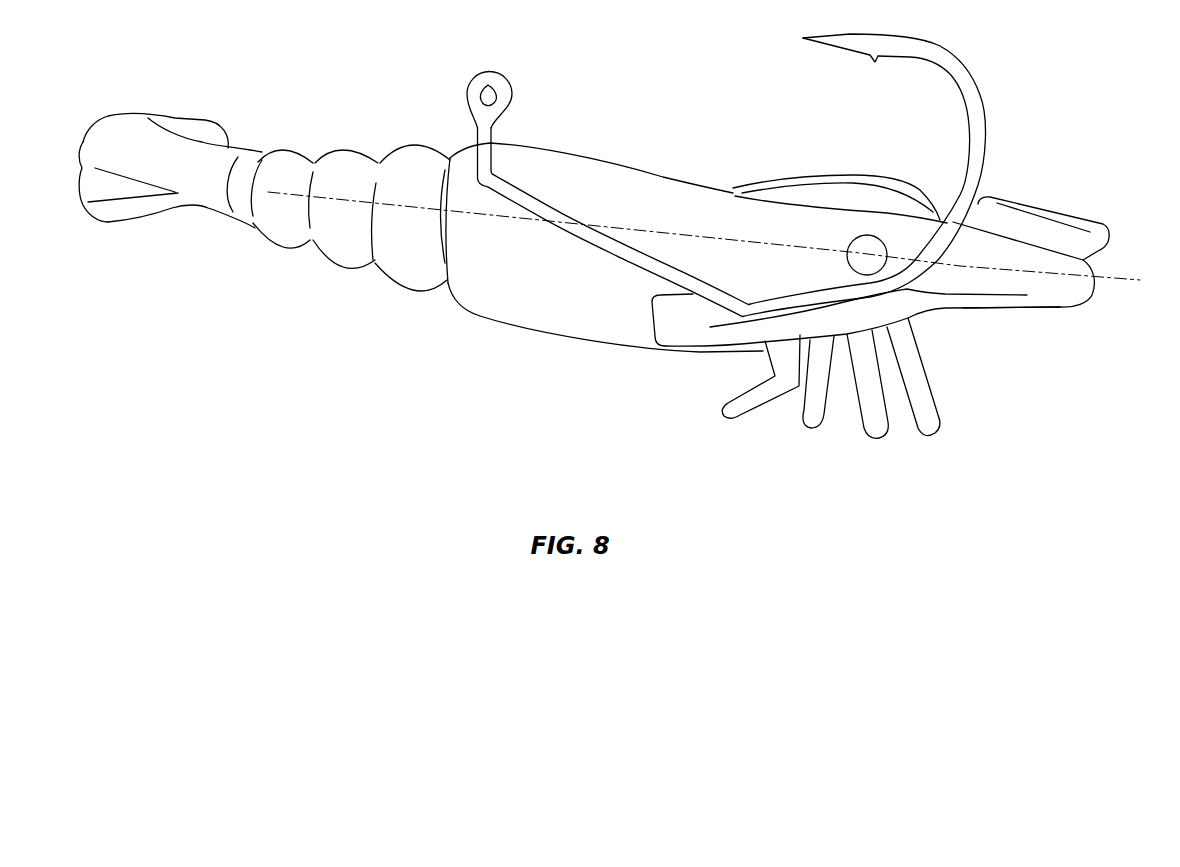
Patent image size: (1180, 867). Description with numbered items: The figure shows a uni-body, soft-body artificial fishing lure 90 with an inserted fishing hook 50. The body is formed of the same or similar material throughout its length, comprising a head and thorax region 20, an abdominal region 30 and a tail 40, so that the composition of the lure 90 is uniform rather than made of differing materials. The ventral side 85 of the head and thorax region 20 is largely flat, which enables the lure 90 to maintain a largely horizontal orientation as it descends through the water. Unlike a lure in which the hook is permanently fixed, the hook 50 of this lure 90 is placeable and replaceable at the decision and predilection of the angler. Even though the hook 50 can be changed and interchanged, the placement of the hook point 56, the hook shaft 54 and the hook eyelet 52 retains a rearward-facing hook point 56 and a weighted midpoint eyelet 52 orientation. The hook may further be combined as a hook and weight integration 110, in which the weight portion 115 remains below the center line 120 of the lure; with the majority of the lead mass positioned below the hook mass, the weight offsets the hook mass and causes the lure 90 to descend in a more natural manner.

The head and thorax region 20 is at (1060, 293).
The abdominal region 30 is at (238, 102).
The tail 40 is at (141, 133).
The hook 50 is at (756, 165).
The hook eyelet 52 is at (494, 68).
The hook shaft 54 is at (590, 236).
The hook point 56 is at (801, 42).
The ventral side 85 is at (1085, 470).
The artificial fishing lure 90 is at (1010, 72).
The hook and weight integration 110 is at (646, 323).
The weight portion 115 is at (907, 287).
The center line 120 is at (1117, 280).